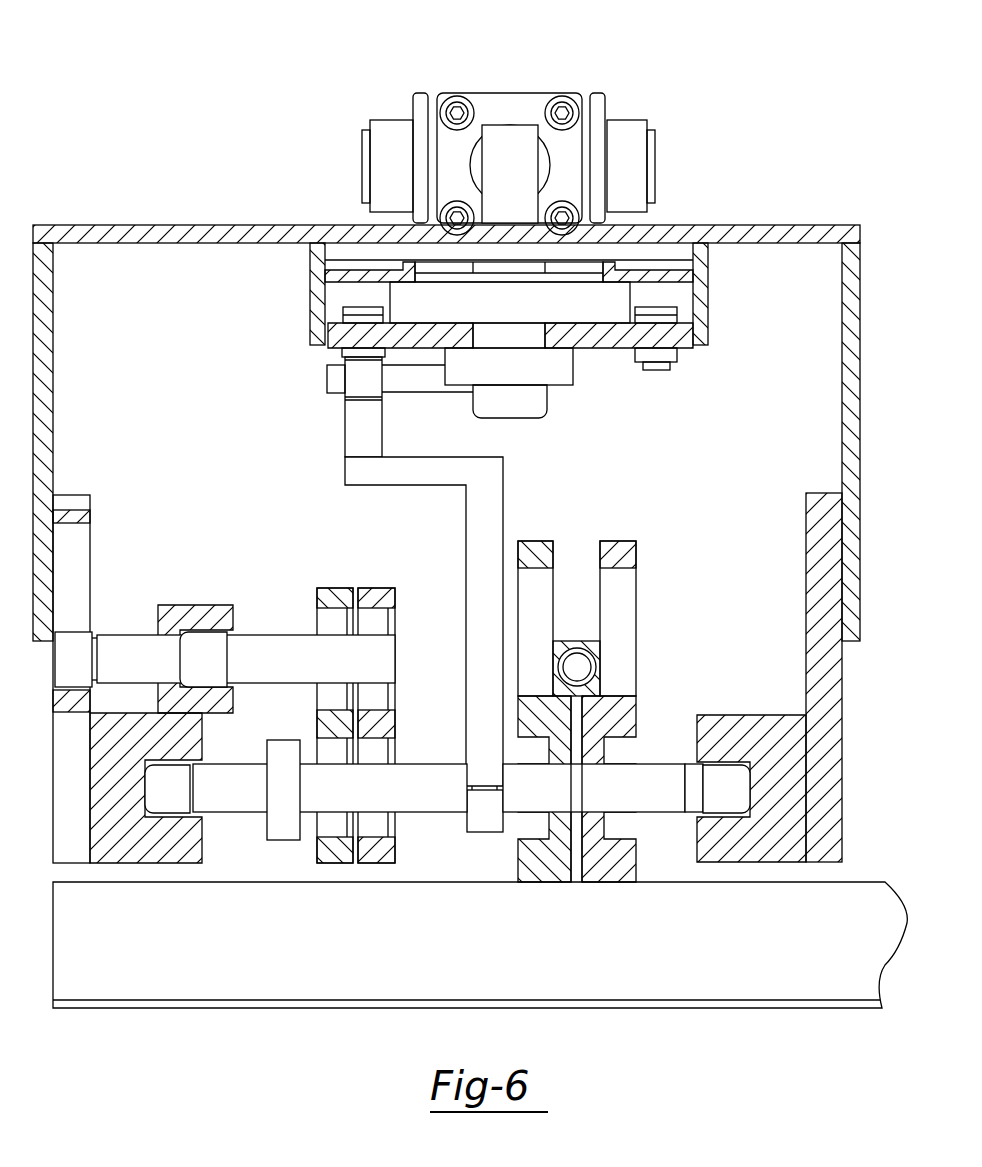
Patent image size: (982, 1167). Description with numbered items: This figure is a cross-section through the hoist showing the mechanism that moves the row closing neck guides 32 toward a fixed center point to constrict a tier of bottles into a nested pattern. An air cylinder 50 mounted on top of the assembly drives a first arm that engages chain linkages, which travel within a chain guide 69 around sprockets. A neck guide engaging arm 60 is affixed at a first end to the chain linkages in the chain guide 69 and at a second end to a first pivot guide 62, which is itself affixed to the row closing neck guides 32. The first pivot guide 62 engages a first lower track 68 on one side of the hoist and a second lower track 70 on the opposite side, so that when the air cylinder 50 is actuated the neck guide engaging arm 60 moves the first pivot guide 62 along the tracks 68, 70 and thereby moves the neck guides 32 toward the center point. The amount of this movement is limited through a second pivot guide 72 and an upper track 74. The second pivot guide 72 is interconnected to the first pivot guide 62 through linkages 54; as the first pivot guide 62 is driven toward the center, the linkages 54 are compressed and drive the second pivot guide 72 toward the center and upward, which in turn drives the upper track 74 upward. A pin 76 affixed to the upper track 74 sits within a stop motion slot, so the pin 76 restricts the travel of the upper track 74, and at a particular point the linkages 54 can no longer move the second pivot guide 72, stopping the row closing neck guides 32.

The row closing neck guides 32 is at (625, 987).
The air cylinder 50 is at (557, 93).
The linkages 54 is at (392, 722).
The neck guide engaging arm 60 is at (488, 522).
The first pivot guide 62 is at (408, 807).
The first lower track 68 is at (103, 800).
The chain guide 69 is at (337, 293).
The second lower track 70 is at (792, 800).
The second pivot guide 72 is at (277, 645).
The upper track 74 is at (167, 612).
The pin 76 is at (70, 670).